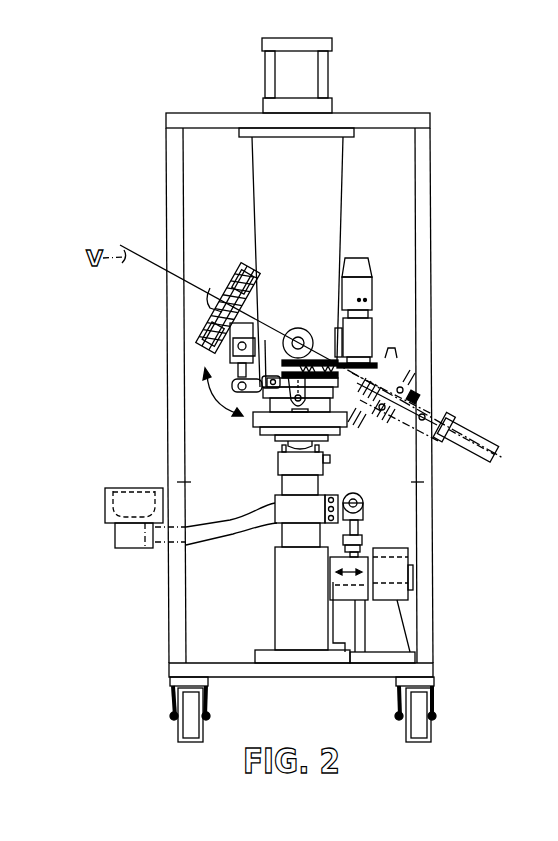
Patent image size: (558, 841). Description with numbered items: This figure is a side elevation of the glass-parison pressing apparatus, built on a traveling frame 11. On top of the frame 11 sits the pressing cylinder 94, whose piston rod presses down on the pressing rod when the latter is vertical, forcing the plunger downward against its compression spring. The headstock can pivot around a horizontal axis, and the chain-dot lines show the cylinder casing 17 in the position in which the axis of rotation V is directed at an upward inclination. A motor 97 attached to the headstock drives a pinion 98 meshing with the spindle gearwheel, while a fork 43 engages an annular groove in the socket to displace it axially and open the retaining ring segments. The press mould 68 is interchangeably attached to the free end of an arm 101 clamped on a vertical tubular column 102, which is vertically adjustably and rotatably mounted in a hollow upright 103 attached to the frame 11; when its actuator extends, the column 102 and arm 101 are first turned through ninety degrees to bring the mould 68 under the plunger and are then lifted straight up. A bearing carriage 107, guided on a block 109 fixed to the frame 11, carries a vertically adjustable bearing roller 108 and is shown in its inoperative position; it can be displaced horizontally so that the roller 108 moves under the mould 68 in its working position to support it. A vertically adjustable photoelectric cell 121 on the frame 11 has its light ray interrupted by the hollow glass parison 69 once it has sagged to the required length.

The traveling frame 11 is at (388, 122).
The pressing cylinder 94 is at (287, 63).
The hollow glass parison 69 is at (207, 290).
The motor 97 is at (365, 283).
The pinion 98 is at (370, 338).
The cylinder casing 17 is at (390, 350).
The fork 43 is at (287, 387).
The photoelectric cell 121 is at (183, 482).
The press mould 68 is at (105, 513).
The arm 101 is at (162, 540).
The tubular column 102 is at (280, 532).
The hollow upright 103 is at (285, 602).
The bearing roller 108 is at (362, 501).
The bearing carriage 107 is at (372, 553).
The block 109 is at (390, 628).